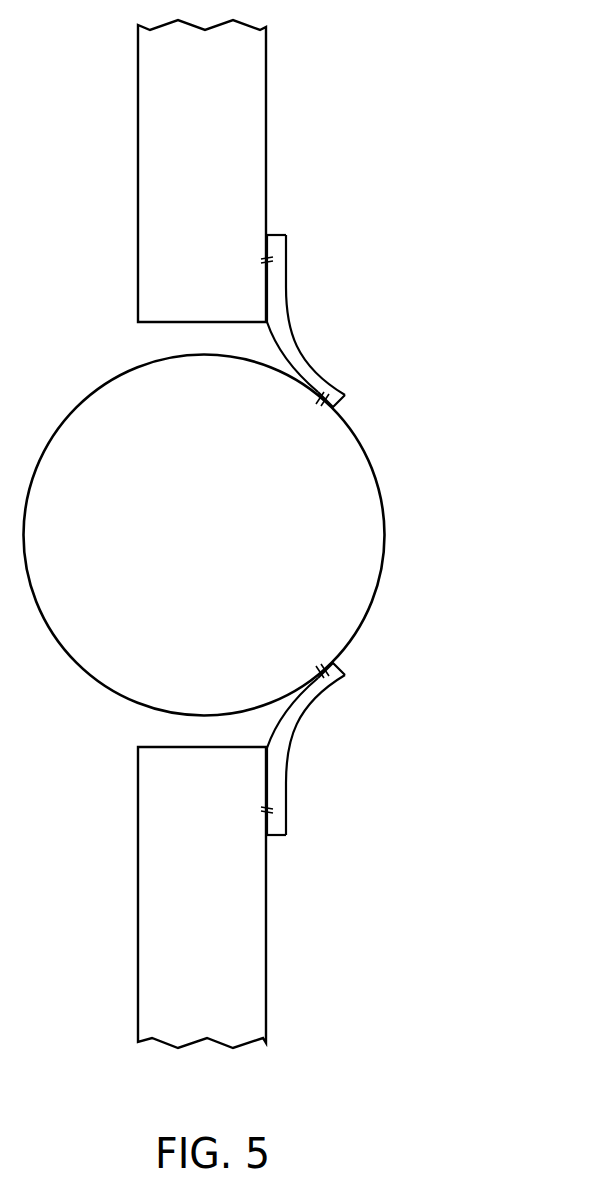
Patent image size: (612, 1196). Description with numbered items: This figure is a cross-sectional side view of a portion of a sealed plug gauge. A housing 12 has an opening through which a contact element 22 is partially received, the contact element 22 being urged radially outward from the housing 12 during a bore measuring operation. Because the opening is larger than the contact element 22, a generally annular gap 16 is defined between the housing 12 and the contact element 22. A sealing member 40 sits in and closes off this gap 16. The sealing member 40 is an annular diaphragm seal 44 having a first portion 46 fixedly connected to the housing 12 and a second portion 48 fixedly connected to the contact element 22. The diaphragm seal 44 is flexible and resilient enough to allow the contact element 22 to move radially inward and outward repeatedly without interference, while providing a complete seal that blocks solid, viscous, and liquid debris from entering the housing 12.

The housing 12 is at (267, 113).
The gap 16 is at (142, 732).
The contact element 22 is at (385, 532).
The sealing member 40 is at (364, 536).
The annular diaphragm seal 44 is at (288, 291).
The first portion 46 is at (291, 232).
The second portion 48 is at (360, 393).